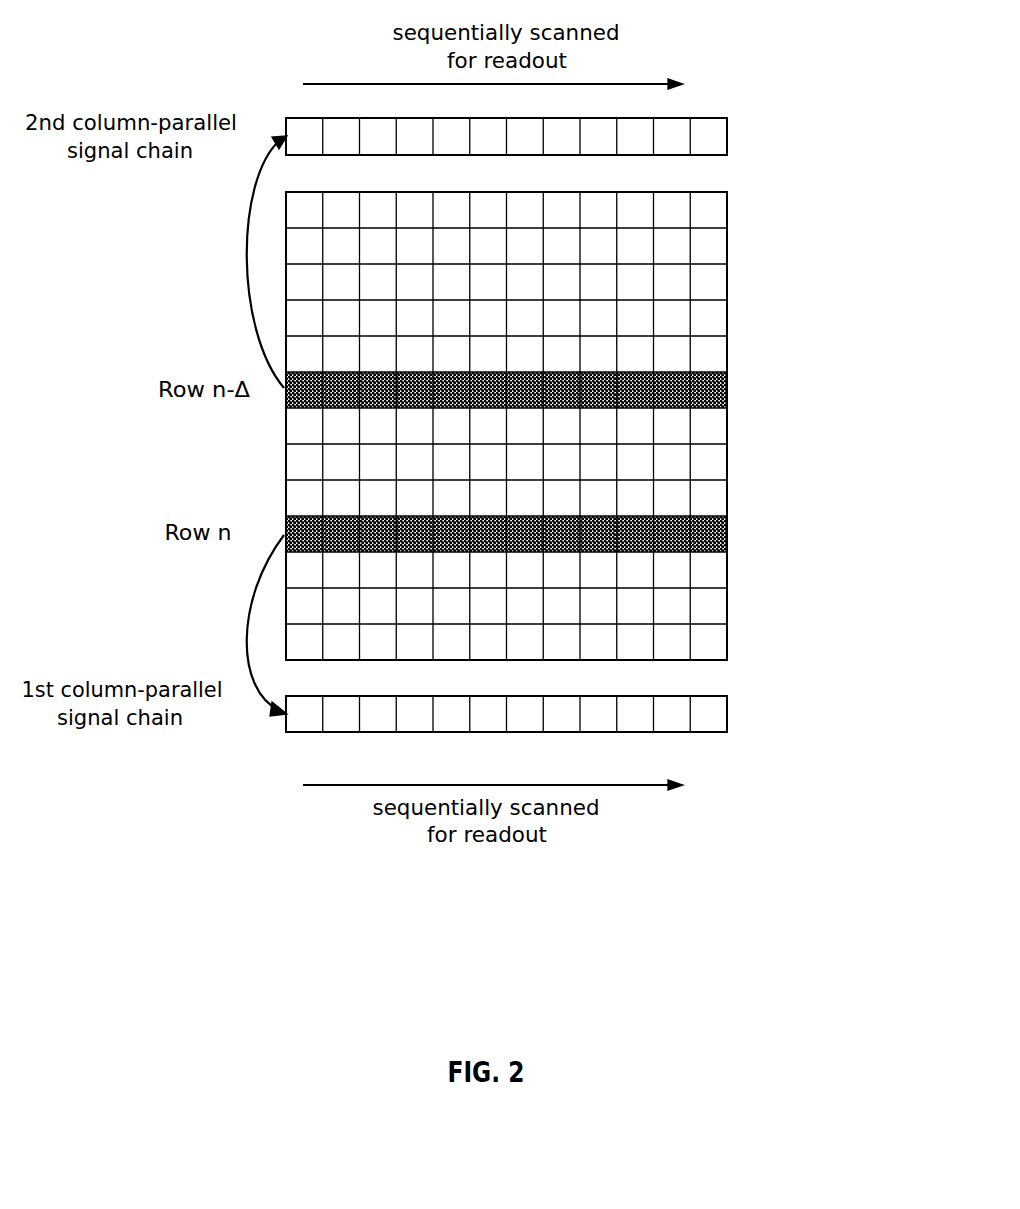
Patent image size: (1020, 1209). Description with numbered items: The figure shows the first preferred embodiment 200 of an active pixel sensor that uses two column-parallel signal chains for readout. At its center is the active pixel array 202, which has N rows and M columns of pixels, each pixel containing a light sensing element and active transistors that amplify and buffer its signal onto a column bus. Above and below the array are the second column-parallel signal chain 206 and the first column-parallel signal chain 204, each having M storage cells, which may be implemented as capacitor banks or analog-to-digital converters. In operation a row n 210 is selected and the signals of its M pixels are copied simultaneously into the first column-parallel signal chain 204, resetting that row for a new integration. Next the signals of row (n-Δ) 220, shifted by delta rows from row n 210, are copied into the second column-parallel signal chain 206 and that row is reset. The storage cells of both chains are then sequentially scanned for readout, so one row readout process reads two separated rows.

The first preferred embodiment 200 is at (823, 813).
The active pixel array 202 is at (748, 276).
The first column-parallel signal chain 204 is at (728, 722).
The second column-parallel signal chain 206 is at (728, 149).
The row n 210 is at (728, 533).
The row (n-Δ) 220 is at (728, 389).